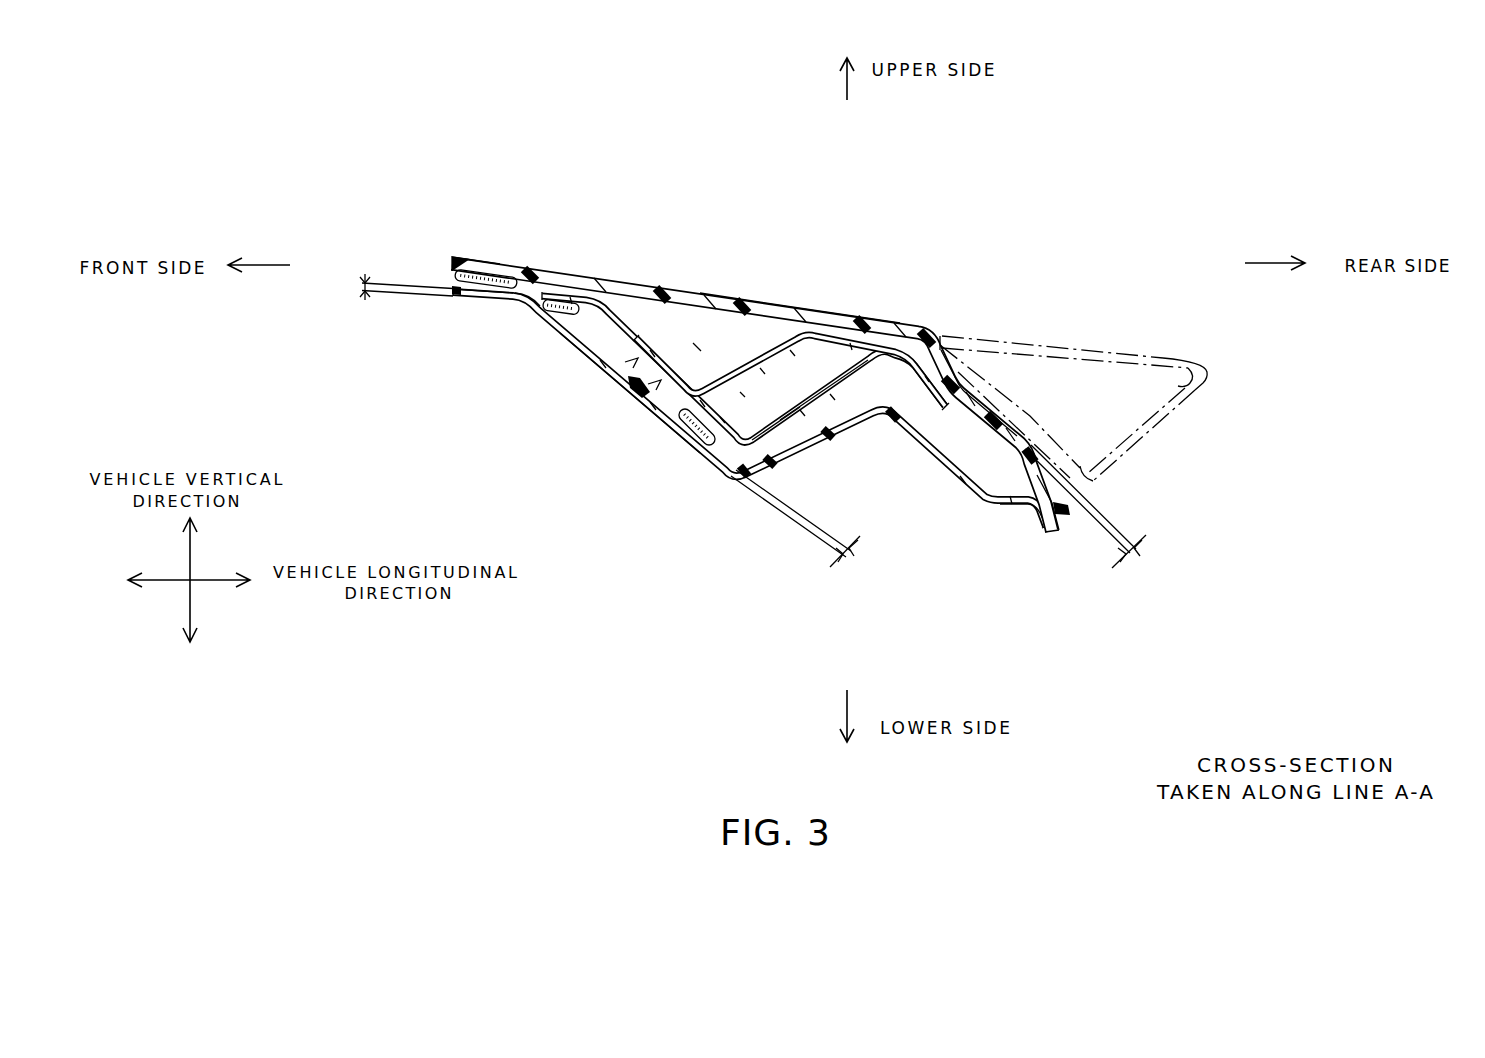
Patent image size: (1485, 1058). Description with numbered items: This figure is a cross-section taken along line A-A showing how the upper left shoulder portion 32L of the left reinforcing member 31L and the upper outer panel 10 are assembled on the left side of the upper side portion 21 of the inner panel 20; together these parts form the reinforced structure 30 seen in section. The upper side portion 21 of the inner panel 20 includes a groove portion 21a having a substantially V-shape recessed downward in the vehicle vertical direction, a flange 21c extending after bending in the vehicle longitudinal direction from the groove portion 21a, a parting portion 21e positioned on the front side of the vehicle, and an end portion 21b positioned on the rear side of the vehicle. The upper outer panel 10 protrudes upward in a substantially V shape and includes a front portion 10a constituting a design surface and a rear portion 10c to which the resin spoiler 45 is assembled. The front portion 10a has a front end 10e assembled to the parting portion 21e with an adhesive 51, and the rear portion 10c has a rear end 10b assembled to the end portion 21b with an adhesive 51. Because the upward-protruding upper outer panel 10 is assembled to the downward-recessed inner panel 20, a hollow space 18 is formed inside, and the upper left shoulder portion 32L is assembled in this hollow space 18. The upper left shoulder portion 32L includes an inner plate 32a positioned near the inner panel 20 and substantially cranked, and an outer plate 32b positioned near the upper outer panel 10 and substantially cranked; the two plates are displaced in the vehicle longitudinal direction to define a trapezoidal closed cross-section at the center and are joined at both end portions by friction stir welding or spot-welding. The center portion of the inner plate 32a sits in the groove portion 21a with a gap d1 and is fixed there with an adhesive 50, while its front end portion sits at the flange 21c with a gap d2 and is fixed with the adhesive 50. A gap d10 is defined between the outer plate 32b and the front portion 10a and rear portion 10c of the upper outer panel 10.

The upper outer panel 10 is at (854, 332).
The front portion 10a is at (818, 311).
The rear end 10b is at (1060, 489).
The rear portion 10c is at (966, 388).
The front end 10e is at (453, 259).
The hollow space 18 is at (697, 347).
The inner panel 20 is at (695, 401).
The upper side portion 21 is at (695, 401).
The groove portion 21a is at (668, 432).
The end portion 21b is at (1037, 521).
The flange 21c is at (535, 317).
The parting portion 21e is at (453, 289).
The bracket 30 is at (690, 378).
The left reinforcing member 31L is at (637, 378).
The upper left shoulder portion 32L is at (653, 399).
The inner plate 32a is at (822, 395).
The outer plate 32b is at (770, 367).
The resin spoiler 45 is at (1163, 357).
The adhesive 50 is at (562, 311).
The adhesive 51 is at (451, 282).
The gap d1 is at (852, 560).
The gap d2 is at (360, 287).
The gap d10 is at (1138, 556).